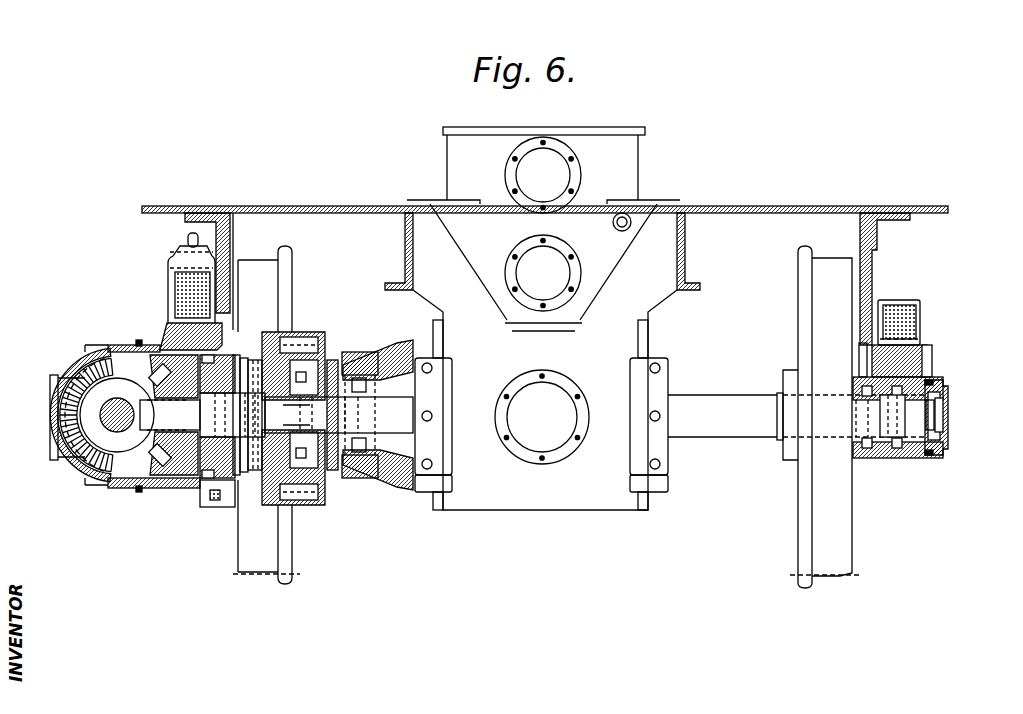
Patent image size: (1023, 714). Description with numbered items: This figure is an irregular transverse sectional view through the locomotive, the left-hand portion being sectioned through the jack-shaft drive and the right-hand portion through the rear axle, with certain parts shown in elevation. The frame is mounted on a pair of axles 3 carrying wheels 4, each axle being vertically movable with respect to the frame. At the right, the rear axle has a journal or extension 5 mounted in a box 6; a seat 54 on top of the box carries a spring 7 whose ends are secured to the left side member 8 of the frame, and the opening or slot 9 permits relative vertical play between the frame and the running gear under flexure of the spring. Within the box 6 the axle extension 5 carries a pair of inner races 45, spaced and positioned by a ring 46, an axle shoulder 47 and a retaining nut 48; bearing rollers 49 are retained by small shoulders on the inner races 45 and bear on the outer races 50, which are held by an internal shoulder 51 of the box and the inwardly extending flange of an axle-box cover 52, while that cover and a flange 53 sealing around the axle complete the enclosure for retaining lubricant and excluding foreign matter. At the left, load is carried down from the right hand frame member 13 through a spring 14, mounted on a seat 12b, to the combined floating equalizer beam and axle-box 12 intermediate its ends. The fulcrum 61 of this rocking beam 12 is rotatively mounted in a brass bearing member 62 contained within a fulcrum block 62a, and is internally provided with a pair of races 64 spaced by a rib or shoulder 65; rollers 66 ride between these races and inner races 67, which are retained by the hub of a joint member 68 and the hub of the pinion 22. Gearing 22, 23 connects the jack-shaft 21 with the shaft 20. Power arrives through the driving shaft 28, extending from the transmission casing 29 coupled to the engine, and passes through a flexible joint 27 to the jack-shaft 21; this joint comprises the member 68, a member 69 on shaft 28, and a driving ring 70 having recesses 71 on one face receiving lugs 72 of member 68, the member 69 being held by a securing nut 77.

The axles 3 is at (698, 406).
The wheels 4 is at (290, 561).
The journal or extension 5 is at (893, 450).
The box 6 is at (905, 458).
The spring 7 is at (916, 322).
The left side member 8 is at (873, 272).
The opening or slot 9 is at (858, 357).
The combined floating equalizer beam and axle-box 12 is at (157, 342).
The seat 12b is at (163, 322).
The right hand frame member 13 is at (231, 247).
The spring 14 is at (174, 282).
The shaft 20 is at (103, 414).
The jack-shaft 21 is at (152, 480).
The pinion 22 is at (158, 495).
The gear 23 is at (128, 462).
The flexible joint 27 is at (309, 342).
The driving shaft 28 is at (387, 410).
The transmission casing 29 is at (543, 318).
The inner races 45 is at (885, 422).
The ring 46 is at (900, 460).
The axle shoulder 47 is at (880, 457).
The retaining nut 48 is at (947, 395).
The bearing rollers 49 is at (916, 460).
The outer races 50 is at (920, 368).
The internal shoulder 51 is at (867, 388).
The axle-box cover 52 is at (944, 402).
The flange 53 is at (868, 440).
The seat 54 is at (928, 352).
The fulcrum 61 is at (236, 372).
The brass bearing member 62 is at (241, 378).
The fulcrum block 62a is at (246, 384).
The races 64 is at (200, 450).
The rib or shoulder 65 is at (206, 458).
The rollers 66 is at (172, 445).
The inner races 67 is at (163, 455).
The joint member 68 is at (247, 507).
The member 69 is at (350, 472).
The driving ring 70 is at (331, 362).
The recesses 71 is at (320, 490).
The lugs 72 is at (291, 360).
The securing nut 77 is at (323, 468).